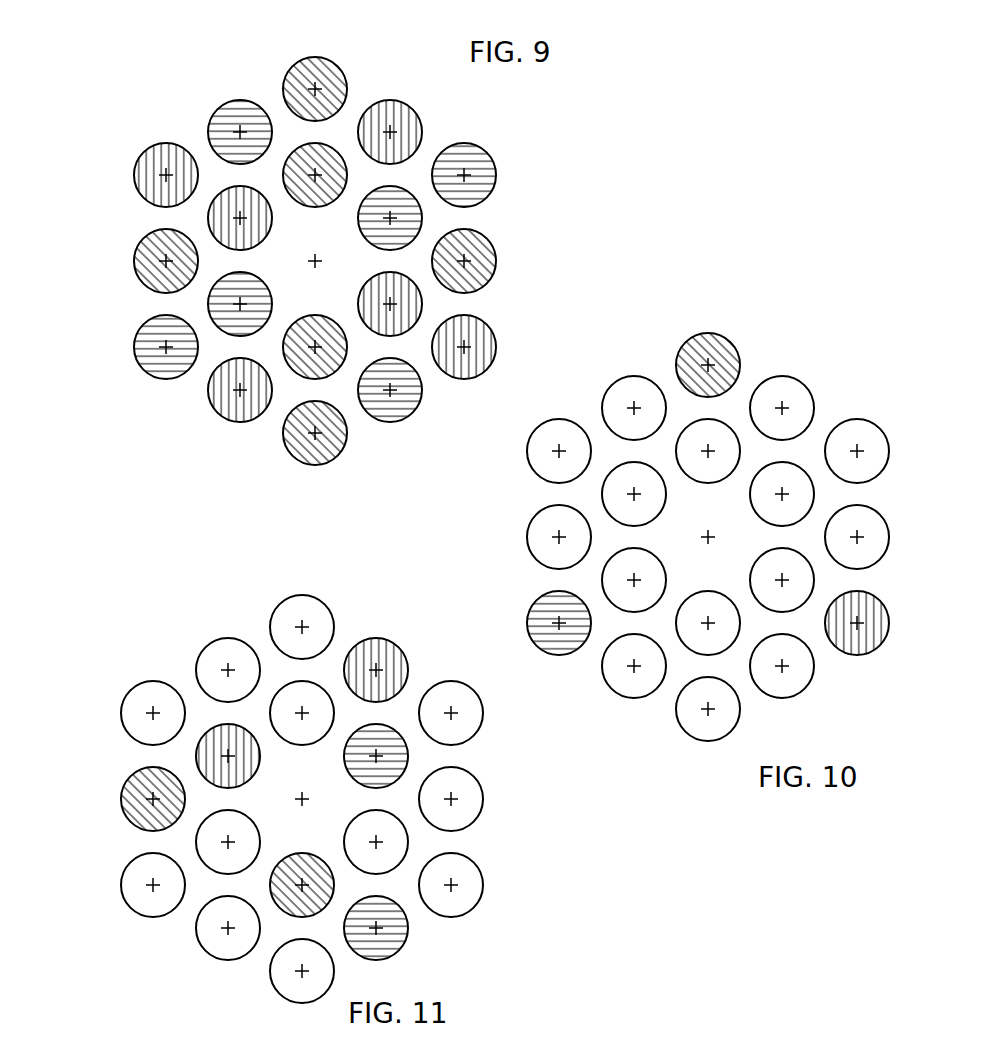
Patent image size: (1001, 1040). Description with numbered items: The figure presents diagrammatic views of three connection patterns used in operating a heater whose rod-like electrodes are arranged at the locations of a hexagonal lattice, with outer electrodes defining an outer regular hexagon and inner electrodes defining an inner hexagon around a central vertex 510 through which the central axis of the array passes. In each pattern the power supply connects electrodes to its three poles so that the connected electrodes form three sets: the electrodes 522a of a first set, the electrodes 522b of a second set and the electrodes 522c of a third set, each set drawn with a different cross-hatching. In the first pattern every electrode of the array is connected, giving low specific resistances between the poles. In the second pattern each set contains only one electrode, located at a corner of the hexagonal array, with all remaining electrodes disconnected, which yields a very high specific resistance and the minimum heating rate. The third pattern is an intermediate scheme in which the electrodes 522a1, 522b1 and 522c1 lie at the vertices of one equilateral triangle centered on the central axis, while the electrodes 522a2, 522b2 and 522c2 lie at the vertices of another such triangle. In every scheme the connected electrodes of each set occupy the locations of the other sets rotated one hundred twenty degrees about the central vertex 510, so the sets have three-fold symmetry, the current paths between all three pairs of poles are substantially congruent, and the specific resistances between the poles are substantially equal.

In FIG. 9, the central vertex 510 is at (314, 266).
In FIG. 11, the central vertex 510 is at (302, 801).
In FIG. 9, the electrodes of a first set 522a is at (155, 165).
In FIG. 10, the electrodes of a first set 522a is at (868, 630).
In FIG. 9, the electrodes of a second set 522b is at (308, 84).
In FIG. 10, the electrodes of a second set 522b is at (710, 331).
In FIG. 9, the electrodes of a third set 522c is at (140, 350).
In FIG. 10, the electrodes of a third set 522c is at (537, 634).
In FIG. 11, the electrode of the first set 522a1 is at (390, 933).
In FIG. 11, the electrode of the first set 522a2 is at (390, 785).
In FIG. 11, the electrode of the second set 522b1 is at (125, 778).
In FIG. 11, the electrode of the second set 522b2 is at (283, 897).
In FIG. 11, the electrode of the third set 522c1 is at (380, 648).
In FIG. 11, the electrode of the third set 522c2 is at (222, 733).